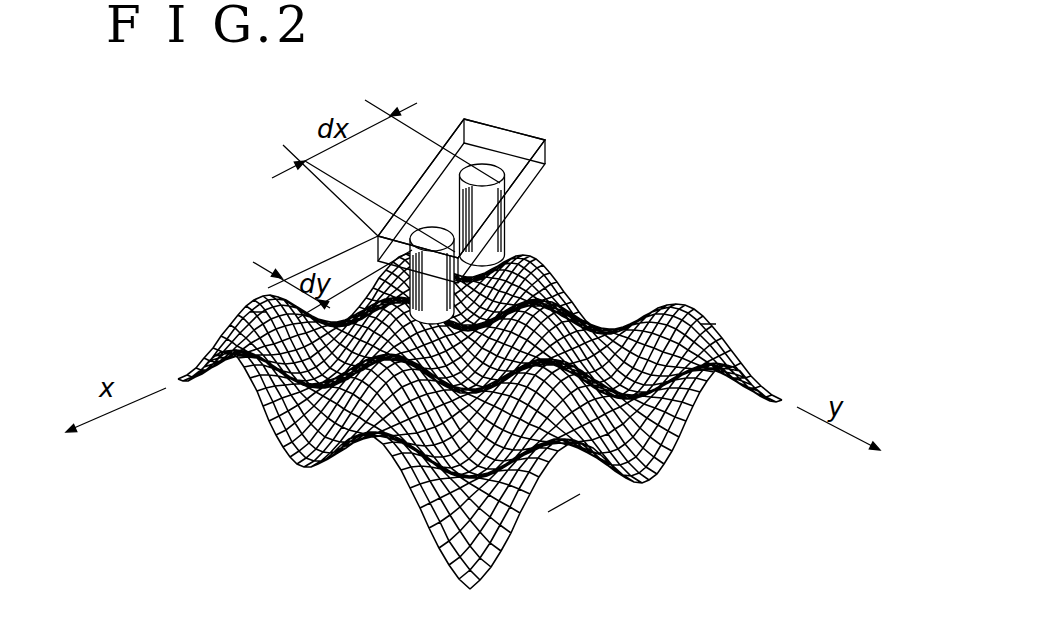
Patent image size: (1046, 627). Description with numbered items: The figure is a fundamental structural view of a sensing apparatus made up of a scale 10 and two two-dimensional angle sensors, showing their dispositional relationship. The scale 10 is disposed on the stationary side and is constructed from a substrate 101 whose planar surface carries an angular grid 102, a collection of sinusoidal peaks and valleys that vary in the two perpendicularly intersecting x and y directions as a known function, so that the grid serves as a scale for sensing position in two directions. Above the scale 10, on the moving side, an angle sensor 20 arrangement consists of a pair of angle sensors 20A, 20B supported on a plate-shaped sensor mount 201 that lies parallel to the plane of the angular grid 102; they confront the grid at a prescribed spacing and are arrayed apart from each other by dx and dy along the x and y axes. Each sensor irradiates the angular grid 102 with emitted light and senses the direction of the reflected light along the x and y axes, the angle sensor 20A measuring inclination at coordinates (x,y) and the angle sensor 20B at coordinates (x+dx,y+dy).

The scale 10 is at (613, 301).
The substrate 101 is at (567, 505).
The angular grid 102 is at (244, 312).
The angle sensor 20 is at (499, 174).
The sensor mount 201 is at (517, 133).
The angle sensor 20A is at (488, 167).
The angle sensor 20B is at (378, 236).